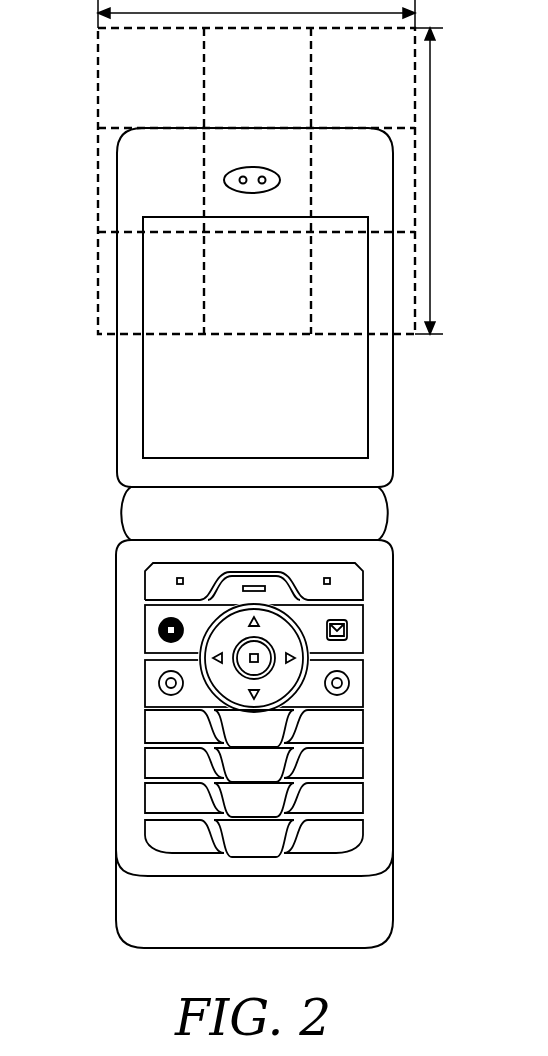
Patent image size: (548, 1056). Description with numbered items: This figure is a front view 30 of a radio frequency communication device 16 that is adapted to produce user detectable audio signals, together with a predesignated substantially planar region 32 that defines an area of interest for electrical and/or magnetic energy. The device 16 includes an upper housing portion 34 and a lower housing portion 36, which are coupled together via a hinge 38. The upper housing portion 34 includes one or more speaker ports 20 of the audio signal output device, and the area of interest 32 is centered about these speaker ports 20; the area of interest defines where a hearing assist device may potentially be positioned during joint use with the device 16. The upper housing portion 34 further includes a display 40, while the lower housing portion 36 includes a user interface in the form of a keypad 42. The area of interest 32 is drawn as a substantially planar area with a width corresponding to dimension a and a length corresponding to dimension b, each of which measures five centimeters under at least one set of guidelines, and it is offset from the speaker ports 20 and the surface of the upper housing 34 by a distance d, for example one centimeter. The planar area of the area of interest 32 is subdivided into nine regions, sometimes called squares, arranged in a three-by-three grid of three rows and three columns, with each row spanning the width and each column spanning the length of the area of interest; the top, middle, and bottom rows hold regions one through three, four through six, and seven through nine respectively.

The radio frequency communication device 16 is at (254, 710).
The speaker ports 20 is at (281, 180).
The front view 30 is at (226, 474).
The substantially planar region 32 is at (110, 74).
The upper housing portion 34 is at (250, 307).
The lower housing portion 36 is at (378, 657).
The hinge 38 is at (372, 515).
The display 40 is at (157, 412).
The keypad 42 is at (355, 726).